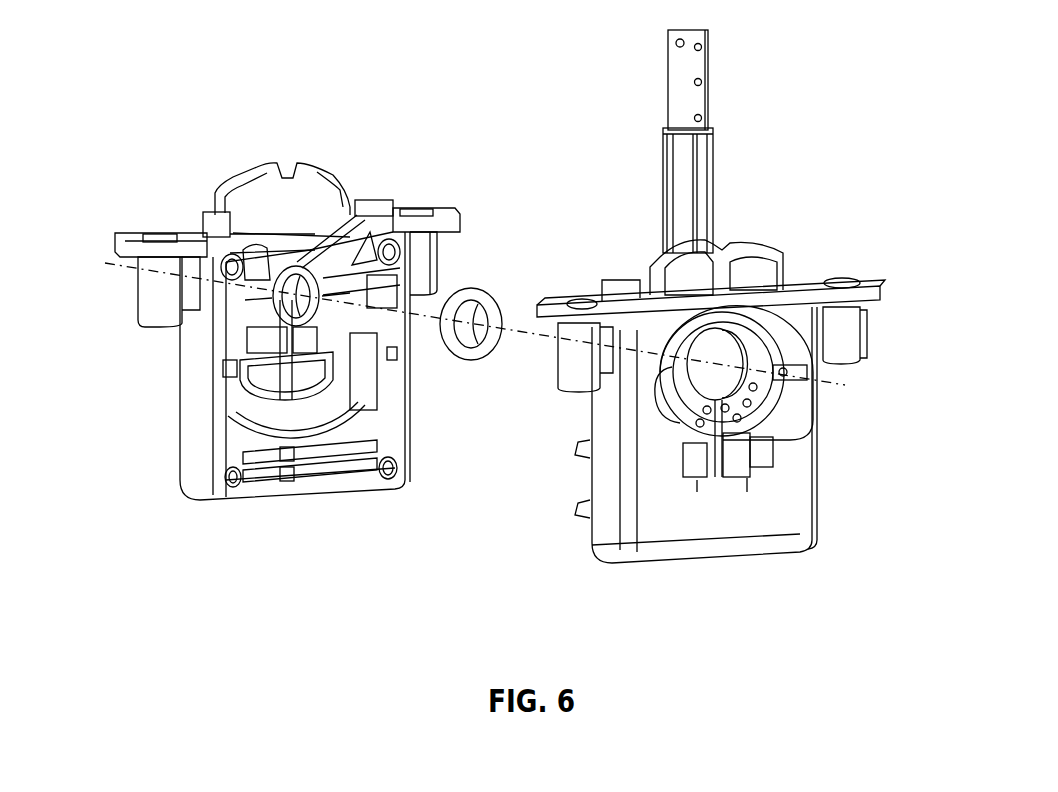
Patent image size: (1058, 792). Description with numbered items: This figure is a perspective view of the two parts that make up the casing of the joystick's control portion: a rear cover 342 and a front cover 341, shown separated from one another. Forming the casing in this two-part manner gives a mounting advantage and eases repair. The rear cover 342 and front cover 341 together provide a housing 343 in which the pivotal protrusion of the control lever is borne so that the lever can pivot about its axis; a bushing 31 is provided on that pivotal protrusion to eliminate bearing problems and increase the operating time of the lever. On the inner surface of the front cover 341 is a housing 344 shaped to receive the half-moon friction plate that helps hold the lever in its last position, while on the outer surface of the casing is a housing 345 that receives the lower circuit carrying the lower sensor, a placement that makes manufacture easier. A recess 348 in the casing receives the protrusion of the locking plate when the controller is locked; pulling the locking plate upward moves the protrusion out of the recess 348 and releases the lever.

The bushing 31 is at (477, 370).
The front cover 341 is at (824, 499).
The rear cover 342 is at (174, 464).
The housing 343 is at (290, 297).
The housing 344 is at (258, 421).
The housing 345 is at (712, 383).
The recess 348 is at (284, 176).